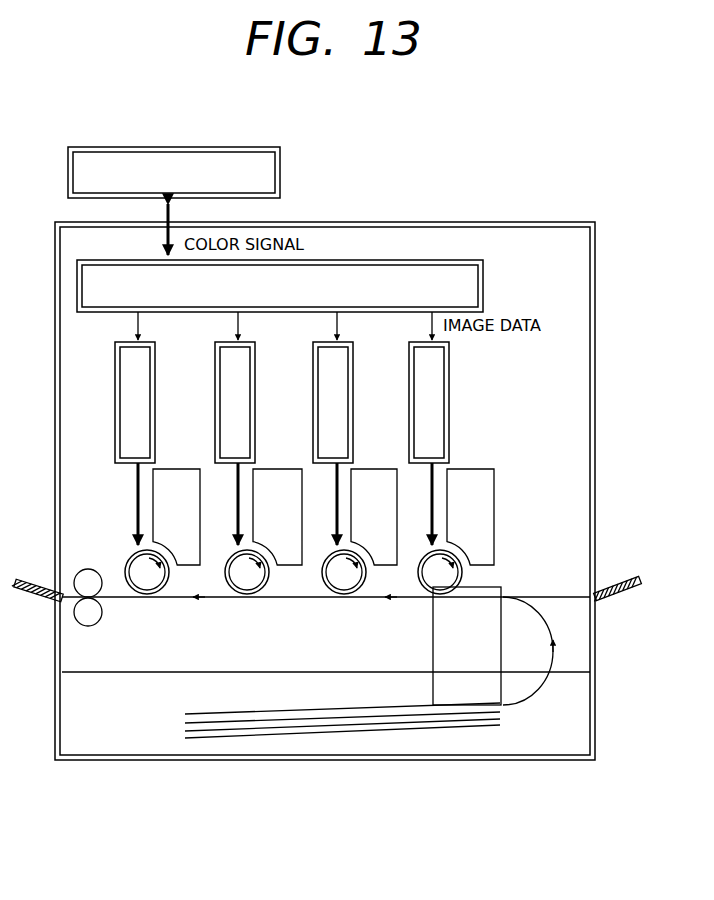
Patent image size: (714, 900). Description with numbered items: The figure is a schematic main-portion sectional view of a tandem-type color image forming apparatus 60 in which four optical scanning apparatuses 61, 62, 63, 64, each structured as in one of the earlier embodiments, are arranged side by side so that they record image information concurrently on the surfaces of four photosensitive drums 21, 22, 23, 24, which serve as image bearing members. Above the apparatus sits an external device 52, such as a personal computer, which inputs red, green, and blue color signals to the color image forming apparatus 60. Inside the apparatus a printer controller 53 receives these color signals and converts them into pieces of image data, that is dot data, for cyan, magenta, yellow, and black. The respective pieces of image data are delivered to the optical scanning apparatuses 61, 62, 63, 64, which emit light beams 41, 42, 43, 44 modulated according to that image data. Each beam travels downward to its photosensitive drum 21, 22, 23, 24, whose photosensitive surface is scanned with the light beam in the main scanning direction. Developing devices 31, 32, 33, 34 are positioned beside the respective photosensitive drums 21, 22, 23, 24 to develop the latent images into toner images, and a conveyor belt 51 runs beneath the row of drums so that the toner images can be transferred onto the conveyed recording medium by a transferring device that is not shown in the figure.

The photosensitive drum 21 is at (147, 596).
The photosensitive drum 22 is at (247, 596).
The photosensitive drum 23 is at (343, 596).
The photosensitive drum 24 is at (440, 582).
The developing device 31 is at (177, 473).
The developing device 32 is at (277, 473).
The developing device 33 is at (379, 473).
The developing device 34 is at (477, 473).
The light beam 41 is at (136, 503).
The light beam 42 is at (236, 533).
The light beam 43 is at (335, 533).
The light beam 44 is at (430, 533).
The conveyor belt 51 is at (547, 612).
The external device 52 is at (282, 167).
The printer controller 53 is at (485, 283).
The color image forming apparatus 60 is at (530, 222).
The optical scanning apparatus 61 is at (125, 392).
The optical scanning apparatus 62 is at (225, 392).
The optical scanning apparatus 63 is at (323, 392).
The optical scanning apparatus 64 is at (418, 392).